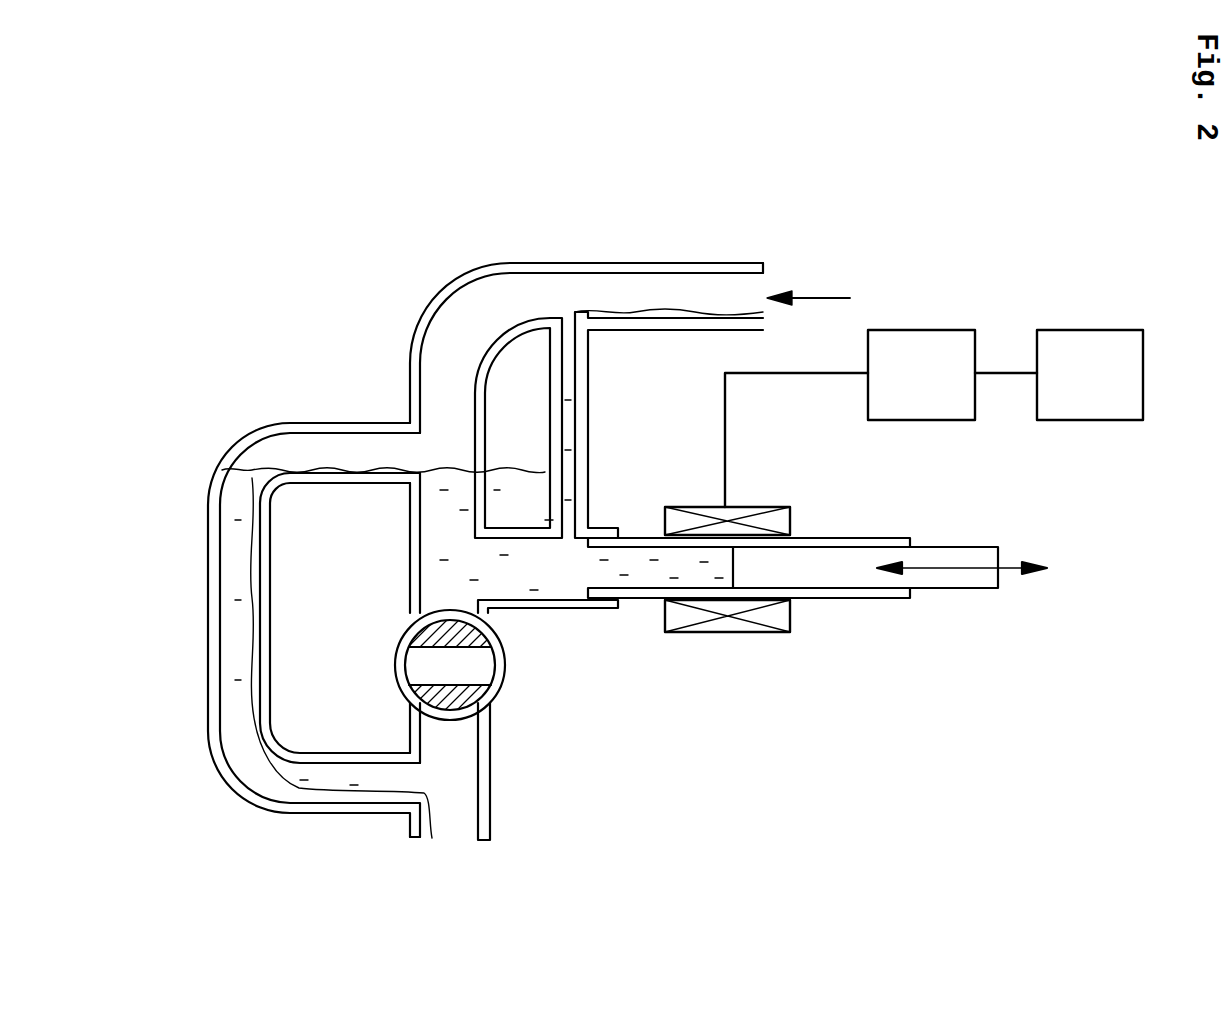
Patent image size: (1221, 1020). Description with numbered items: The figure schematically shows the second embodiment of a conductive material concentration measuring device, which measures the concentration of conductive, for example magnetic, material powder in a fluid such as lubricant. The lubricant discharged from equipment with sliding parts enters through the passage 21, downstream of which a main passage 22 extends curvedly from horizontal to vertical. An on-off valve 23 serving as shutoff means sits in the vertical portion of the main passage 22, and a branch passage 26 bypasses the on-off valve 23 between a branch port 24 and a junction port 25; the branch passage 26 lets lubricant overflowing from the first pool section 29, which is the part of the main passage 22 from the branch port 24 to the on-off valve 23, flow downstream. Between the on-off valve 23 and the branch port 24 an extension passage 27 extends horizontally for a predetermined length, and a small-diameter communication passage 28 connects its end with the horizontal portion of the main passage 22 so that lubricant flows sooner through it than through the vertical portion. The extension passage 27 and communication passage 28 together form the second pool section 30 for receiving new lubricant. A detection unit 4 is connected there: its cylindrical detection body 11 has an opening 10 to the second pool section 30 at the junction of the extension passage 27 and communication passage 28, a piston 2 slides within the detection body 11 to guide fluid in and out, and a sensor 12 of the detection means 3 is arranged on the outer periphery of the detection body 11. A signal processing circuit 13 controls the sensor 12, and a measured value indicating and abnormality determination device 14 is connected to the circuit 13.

The piston 2 is at (960, 615).
The detection means 3 is at (815, 508).
The detection unit 4 is at (890, 635).
The opening 10 is at (585, 575).
The detection body 11 is at (832, 600).
The sensor 12 is at (726, 627).
The signal processing circuit 13 is at (953, 333).
The measured value indicating and abnormality determination device 14 is at (1115, 330).
The passage 21 is at (436, 250).
The main passage 22 is at (410, 340).
The on-off valve 23 is at (502, 692).
The branch port 24 is at (417, 443).
The junction port 25 is at (417, 778).
The branch passage 26 is at (207, 678).
The extension passage 27 is at (532, 612).
The communication passage 28 is at (548, 440).
The first pool section 29 is at (448, 535).
The second pool section 30 is at (538, 555).